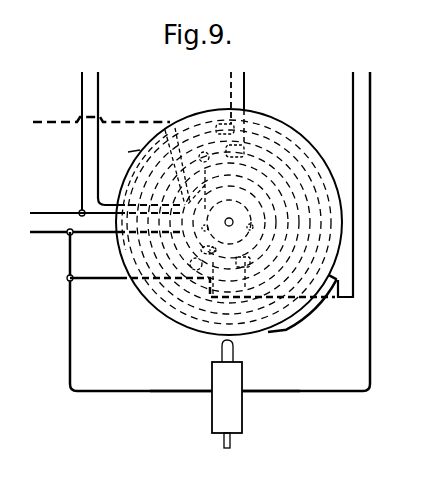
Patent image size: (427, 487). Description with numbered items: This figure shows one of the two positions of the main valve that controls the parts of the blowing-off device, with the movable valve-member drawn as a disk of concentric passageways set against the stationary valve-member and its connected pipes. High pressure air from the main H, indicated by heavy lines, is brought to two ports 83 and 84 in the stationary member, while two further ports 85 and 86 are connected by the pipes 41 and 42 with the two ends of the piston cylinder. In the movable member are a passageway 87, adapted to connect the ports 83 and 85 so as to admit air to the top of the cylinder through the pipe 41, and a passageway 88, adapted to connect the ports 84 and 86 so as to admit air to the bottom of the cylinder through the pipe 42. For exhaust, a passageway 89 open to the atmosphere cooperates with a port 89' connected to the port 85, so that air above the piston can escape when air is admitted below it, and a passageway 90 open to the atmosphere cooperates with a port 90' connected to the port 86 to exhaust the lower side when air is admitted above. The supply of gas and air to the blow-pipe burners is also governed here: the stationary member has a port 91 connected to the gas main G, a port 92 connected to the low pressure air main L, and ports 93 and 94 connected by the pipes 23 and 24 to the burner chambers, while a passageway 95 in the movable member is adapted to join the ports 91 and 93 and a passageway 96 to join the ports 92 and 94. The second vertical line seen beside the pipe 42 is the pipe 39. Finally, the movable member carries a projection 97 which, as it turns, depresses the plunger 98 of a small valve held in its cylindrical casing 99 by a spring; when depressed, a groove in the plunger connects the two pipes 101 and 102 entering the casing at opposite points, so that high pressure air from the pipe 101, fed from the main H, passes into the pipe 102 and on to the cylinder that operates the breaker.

The pipe 23 is at (229, 92).
The pipe 24 is at (246, 95).
The pipe 39 is at (80, 78).
The pipe 41 is at (351, 97).
The pipe 42 is at (100, 99).
The port 83 is at (243, 259).
The port 84 is at (204, 249).
The port 85 is at (190, 264).
The port 86 is at (184, 205).
The passageway 87 is at (248, 219).
The passageway 88 is at (250, 187).
The passageway 89 is at (227, 222).
The port 89' is at (197, 270).
The passageway 90 is at (124, 152).
The port 90' is at (145, 189).
The port 91 is at (195, 140).
The port 92 is at (203, 161).
The port 93 is at (220, 127).
The port 94 is at (228, 150).
The passageway 95 is at (290, 153).
The passageway 96 is at (284, 181).
The projection 97 is at (302, 313).
The plunger 98 is at (234, 351).
The cylindrical casing 99 is at (227, 405).
The pipe 101 is at (196, 394).
The pipe 102 is at (286, 394).
The gas main G is at (62, 118).
The low pressure air main L is at (60, 209).
The high pressure air main H is at (62, 229).